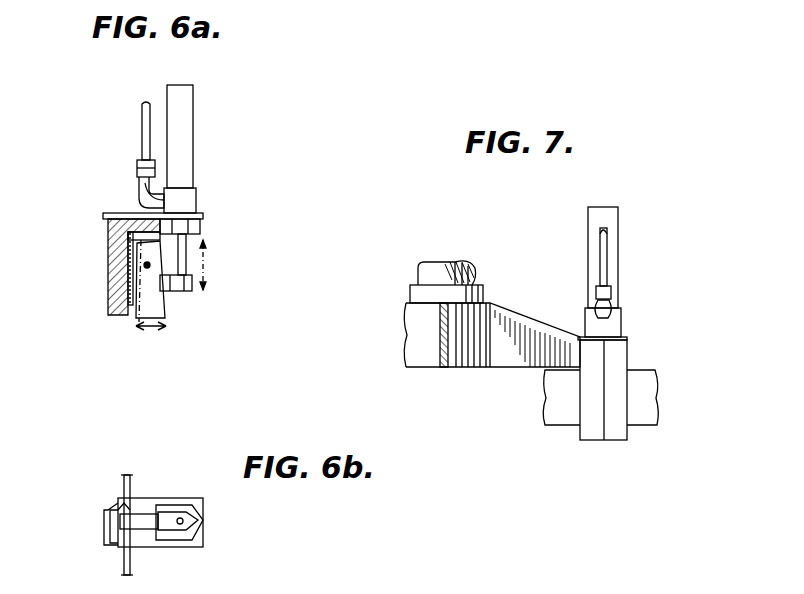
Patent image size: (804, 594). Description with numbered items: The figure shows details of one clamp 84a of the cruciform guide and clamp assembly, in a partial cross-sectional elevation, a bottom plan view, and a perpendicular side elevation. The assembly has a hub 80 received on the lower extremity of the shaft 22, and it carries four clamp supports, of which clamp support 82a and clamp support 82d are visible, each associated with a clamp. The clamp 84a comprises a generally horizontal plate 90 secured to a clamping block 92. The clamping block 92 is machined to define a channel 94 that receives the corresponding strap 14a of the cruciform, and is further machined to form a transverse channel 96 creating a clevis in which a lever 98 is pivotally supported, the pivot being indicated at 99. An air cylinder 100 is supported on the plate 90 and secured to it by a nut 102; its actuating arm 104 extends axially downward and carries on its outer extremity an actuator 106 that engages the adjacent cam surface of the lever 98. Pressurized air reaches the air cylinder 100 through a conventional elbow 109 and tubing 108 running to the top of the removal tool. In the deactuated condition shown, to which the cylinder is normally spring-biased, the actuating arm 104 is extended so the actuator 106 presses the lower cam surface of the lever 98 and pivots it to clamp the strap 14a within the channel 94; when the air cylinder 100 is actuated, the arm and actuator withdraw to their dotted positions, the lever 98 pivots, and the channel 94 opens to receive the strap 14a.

In FIG. 6A, the air cylinder 100 is at (193, 130).
In FIG. 7, the air cylinder 100 is at (618, 238).
In FIG. 6A, the tubing 108 is at (142, 124).
In FIG. 6A, the elbow 109 is at (139, 188).
In FIG. 6A, the horizontal plate 90 is at (114, 213).
In FIG. 6A, the clamping block 92 is at (110, 242).
In FIG. 6B, the clamping block 92 is at (105, 558).
In FIG. 7, the clamping block 92 is at (590, 440).
In FIG. 6A, the strap 14a is at (130, 300).
In FIG. 6B, the strap 14a is at (130, 480).
In FIG. 7, the strap 14a is at (556, 418).
In FIG. 6A, the pivot 99 is at (147, 265).
In FIG. 6A, the lever 98 is at (137, 322).
In FIG. 6A, the nut 102 is at (198, 226).
In FIG. 6A, the actuating arm 104 is at (186, 261).
In FIG. 6A, the actuator 106 is at (176, 291).
In FIG. 6A, the clamp 84a is at (244, 216).
In FIG. 6B, the channel 94 is at (118, 506).
In FIG. 6B, the transverse channel 96 is at (143, 530).
In FIG. 7, the clamp support 82d is at (440, 327).
In FIG. 7, the clamp support 82a is at (520, 324).
In FIG. 7, the hub 80 is at (468, 367).
In FIG. 7, the shaft 22 is at (470, 262).